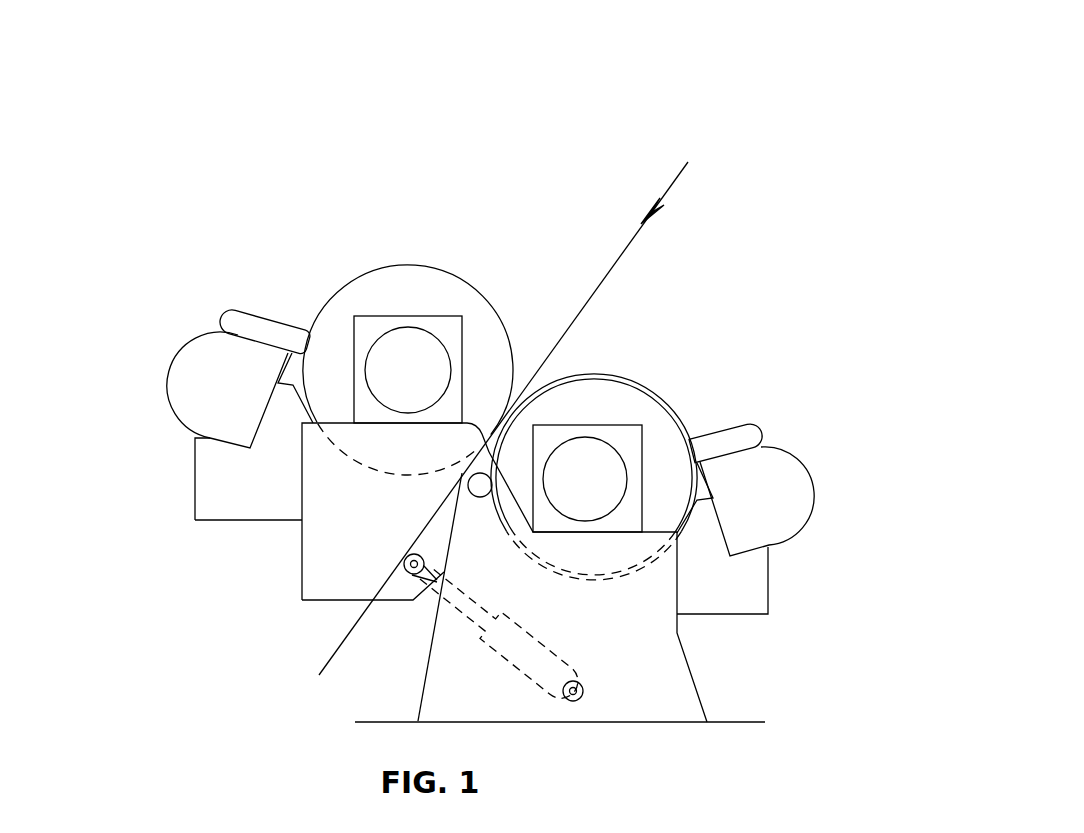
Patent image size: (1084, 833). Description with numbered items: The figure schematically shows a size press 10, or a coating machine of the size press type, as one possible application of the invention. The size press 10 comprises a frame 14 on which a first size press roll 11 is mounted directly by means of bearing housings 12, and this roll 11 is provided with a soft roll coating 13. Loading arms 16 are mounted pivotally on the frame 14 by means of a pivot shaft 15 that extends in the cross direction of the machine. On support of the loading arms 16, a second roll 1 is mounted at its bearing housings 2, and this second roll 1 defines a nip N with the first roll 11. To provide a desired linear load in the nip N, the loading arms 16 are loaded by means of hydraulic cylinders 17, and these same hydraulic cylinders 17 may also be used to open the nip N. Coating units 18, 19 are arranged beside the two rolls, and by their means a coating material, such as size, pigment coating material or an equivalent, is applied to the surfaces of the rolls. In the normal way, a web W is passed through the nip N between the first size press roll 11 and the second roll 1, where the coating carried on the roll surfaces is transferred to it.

The size press 10 is at (425, 117).
The second roll 1 is at (383, 283).
The bearing housings 2 is at (440, 332).
The first size press roll 11 is at (637, 410).
The bearing housings 12 is at (640, 426).
The soft roll coating 13 is at (608, 376).
The frame 14 is at (670, 663).
The pivot shaft 15 is at (458, 479).
The loading arms 16 is at (317, 543).
The hydraulic cylinders 17 is at (533, 650).
The coating unit 18 is at (823, 442).
The coating unit 19 is at (148, 303).
The web W is at (627, 238).
The nip N is at (528, 350).